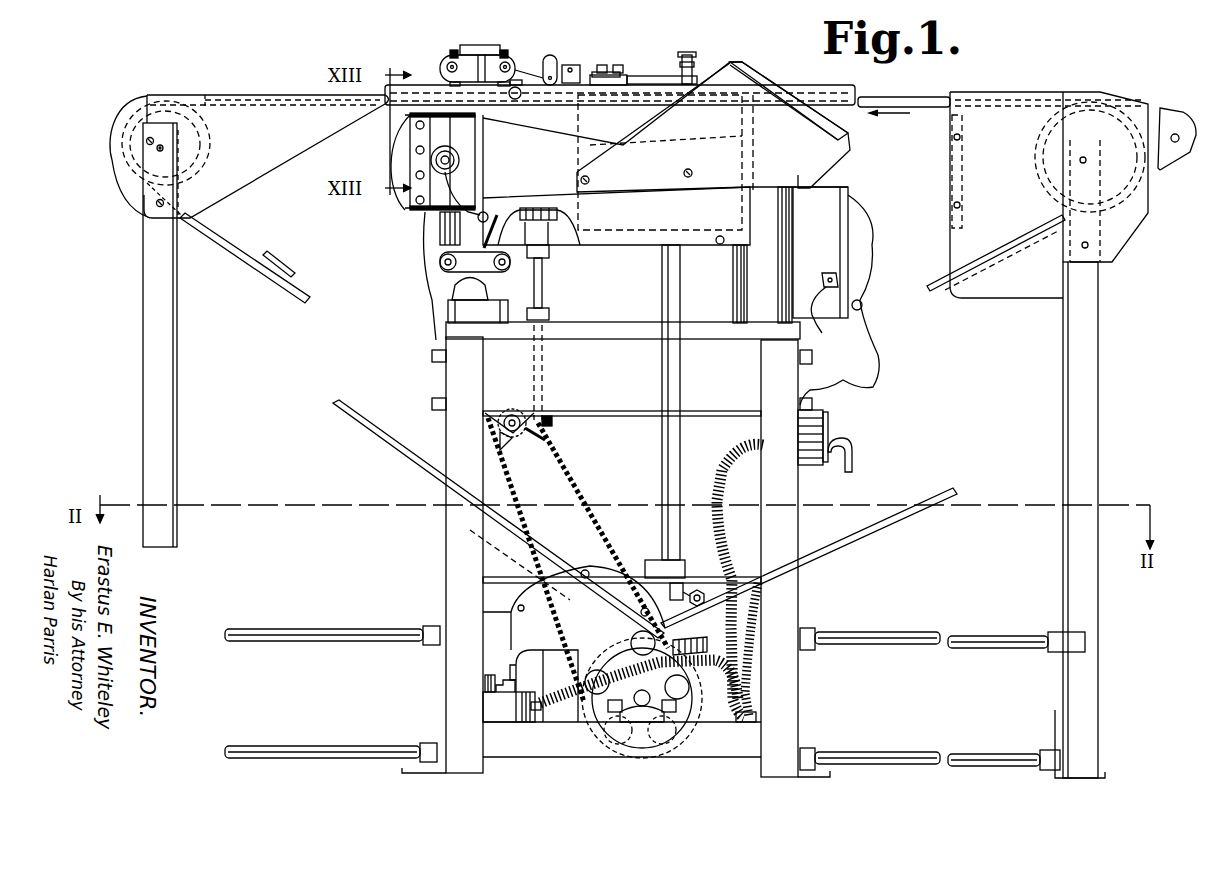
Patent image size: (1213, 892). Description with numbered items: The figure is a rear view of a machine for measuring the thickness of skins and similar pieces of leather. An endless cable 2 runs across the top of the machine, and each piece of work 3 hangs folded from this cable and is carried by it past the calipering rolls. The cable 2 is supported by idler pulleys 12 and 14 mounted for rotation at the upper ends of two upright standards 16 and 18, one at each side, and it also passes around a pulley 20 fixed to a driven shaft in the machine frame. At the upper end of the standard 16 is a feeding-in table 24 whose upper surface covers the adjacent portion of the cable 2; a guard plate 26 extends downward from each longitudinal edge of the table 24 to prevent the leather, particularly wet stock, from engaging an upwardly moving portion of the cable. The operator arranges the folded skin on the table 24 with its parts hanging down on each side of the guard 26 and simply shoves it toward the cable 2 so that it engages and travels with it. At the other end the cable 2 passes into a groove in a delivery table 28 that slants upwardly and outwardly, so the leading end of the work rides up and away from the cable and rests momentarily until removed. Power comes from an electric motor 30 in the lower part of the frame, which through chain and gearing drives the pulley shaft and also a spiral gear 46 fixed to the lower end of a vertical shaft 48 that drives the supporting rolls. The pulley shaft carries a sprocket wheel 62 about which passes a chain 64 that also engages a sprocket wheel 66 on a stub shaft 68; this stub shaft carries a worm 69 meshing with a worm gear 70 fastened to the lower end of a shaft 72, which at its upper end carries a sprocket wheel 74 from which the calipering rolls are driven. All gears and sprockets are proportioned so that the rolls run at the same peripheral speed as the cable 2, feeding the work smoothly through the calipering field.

The endless cable 2 is at (322, 93).
The piece of work 3 is at (842, 118).
The idler pulley 12 is at (1032, 150).
The idler pulley 14 is at (208, 137).
The standard 16 is at (1098, 322).
The standard 18 is at (145, 318).
The pulley 20 is at (628, 650).
The feeding-in table 24 is at (1168, 108).
The guard plate 26 is at (1118, 237).
The delivery table 28 is at (238, 178).
The electric motor 30 is at (535, 660).
The spiral gear 46 is at (700, 655).
The shaft 48 is at (672, 458).
The sprocket wheel 62 is at (598, 662).
The chain 64 is at (578, 486).
The sprocket wheel 66 is at (540, 438).
The stub shaft 68 is at (512, 418).
The worm 69 is at (514, 435).
The worm gear 70 is at (552, 420).
The shaft 72 is at (545, 277).
The sprocket wheel 74 is at (538, 207).